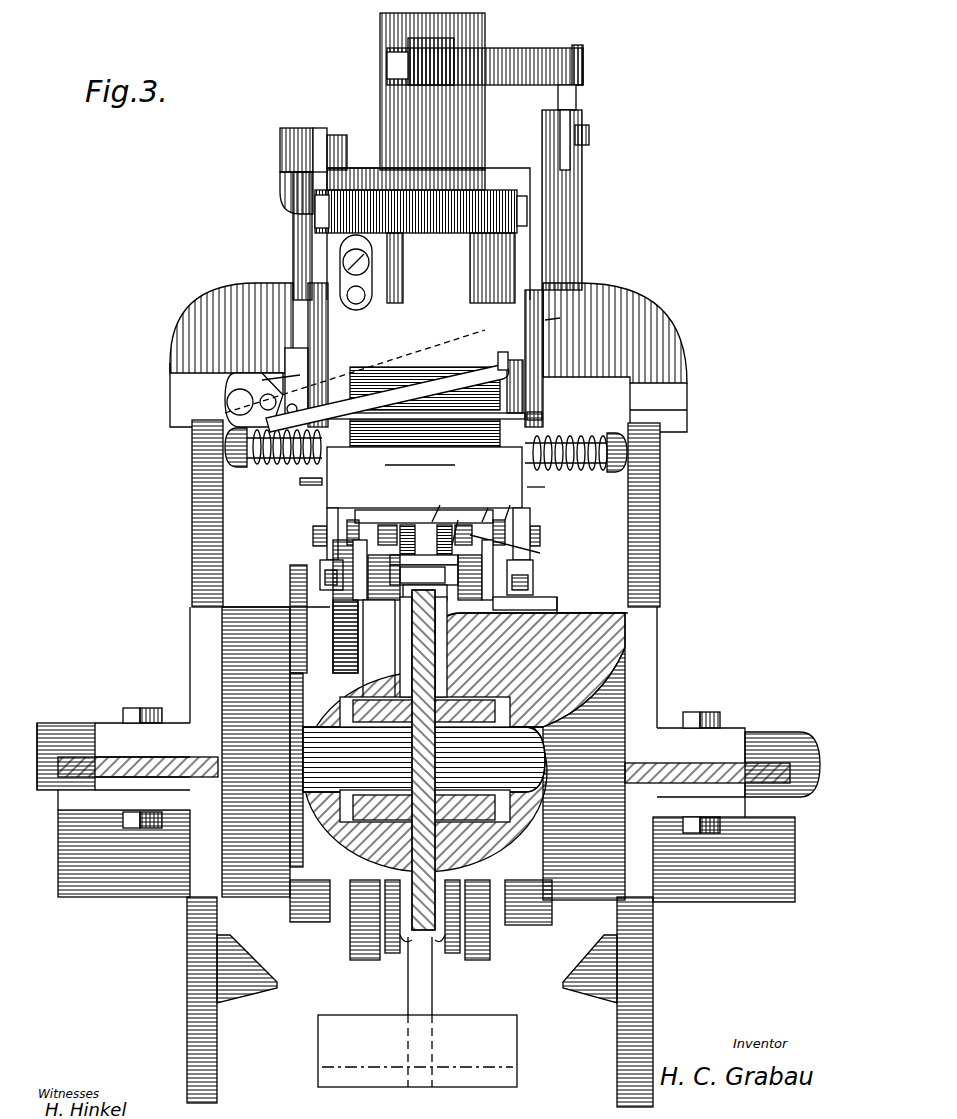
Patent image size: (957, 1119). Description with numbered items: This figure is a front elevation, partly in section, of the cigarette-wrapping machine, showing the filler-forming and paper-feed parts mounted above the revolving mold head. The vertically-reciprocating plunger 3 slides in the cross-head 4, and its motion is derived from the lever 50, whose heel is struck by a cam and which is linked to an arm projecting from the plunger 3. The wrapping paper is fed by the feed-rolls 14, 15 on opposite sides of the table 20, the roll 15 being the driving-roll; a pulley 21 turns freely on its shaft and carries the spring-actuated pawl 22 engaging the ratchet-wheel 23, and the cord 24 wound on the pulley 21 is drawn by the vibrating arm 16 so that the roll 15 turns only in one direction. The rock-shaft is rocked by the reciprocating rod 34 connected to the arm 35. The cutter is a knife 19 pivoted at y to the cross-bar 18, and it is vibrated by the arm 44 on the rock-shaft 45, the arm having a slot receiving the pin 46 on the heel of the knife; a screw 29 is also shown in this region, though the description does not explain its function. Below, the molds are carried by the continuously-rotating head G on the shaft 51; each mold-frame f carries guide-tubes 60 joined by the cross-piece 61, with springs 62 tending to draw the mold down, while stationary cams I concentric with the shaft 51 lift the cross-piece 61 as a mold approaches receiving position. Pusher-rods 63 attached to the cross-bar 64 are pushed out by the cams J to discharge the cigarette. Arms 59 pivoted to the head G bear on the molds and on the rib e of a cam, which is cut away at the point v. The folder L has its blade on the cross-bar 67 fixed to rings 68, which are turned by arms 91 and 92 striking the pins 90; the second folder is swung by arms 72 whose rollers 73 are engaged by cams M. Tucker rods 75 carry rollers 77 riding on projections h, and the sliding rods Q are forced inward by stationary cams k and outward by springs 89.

The plunger 3 is at (380, 97).
The cross-head 4 is at (503, 170).
The feed-roll 14 is at (435, 447).
The feed-roll 15 is at (410, 385).
The vibrating arm 16 is at (510, 284).
The cross-bar 18 is at (290, 369).
The knife 19 is at (425, 383).
The table 20 is at (360, 410).
The pulley 21 is at (540, 372).
The spring-actuated pawl 22 is at (498, 350).
The ratchet-wheel 23 is at (507, 390).
The cord 24 is at (564, 313).
The screw 29 is at (372, 268).
The reciprocating rod 34 is at (299, 214).
The arm 35 is at (300, 205).
The arm 44 is at (243, 385).
The rock-shaft 45 is at (227, 402).
The pin 46 is at (268, 394).
The lever 50 is at (578, 187).
The shaft 51 is at (428, 757).
The arm 59 is at (327, 518).
The guide-tube 60 is at (426, 540).
The cross-piece 61 is at (325, 552).
The spring 62 is at (520, 560).
The pusher-rod 63 is at (424, 577).
The cross-bar 64 is at (531, 670).
The cross-bar 67 is at (370, 465).
The ring 68 is at (486, 500).
The arm 72 is at (431, 504).
The roller 73 is at (455, 507).
The rod 75 is at (509, 500).
The roller 77 is at (521, 549).
The spring 89 is at (598, 440).
The pin 90 is at (543, 415).
The arm 91 is at (310, 296).
The arm 92 is at (292, 580).
The sliding rod Q is at (273, 462).
The folder L is at (420, 481).
The mold-frame f is at (543, 486).
The pivot y is at (294, 398).
The cut-away point v is at (557, 600).
The cam M is at (423, 620).
The projection h is at (525, 609).
The stationary cam k is at (417, 817).
The rib e is at (320, 925).
The cam J is at (422, 944).
The stationary cam I is at (422, 933).
The revolving head G is at (408, 990).